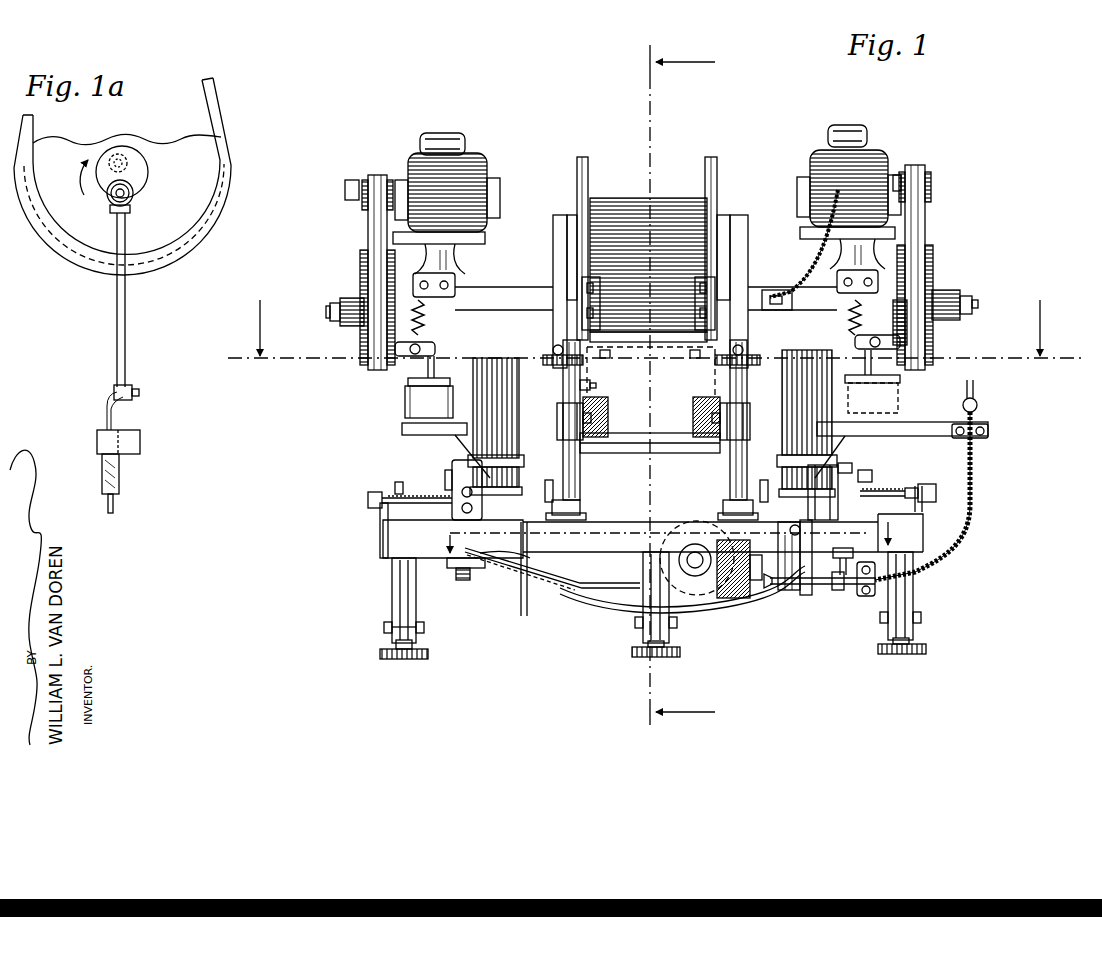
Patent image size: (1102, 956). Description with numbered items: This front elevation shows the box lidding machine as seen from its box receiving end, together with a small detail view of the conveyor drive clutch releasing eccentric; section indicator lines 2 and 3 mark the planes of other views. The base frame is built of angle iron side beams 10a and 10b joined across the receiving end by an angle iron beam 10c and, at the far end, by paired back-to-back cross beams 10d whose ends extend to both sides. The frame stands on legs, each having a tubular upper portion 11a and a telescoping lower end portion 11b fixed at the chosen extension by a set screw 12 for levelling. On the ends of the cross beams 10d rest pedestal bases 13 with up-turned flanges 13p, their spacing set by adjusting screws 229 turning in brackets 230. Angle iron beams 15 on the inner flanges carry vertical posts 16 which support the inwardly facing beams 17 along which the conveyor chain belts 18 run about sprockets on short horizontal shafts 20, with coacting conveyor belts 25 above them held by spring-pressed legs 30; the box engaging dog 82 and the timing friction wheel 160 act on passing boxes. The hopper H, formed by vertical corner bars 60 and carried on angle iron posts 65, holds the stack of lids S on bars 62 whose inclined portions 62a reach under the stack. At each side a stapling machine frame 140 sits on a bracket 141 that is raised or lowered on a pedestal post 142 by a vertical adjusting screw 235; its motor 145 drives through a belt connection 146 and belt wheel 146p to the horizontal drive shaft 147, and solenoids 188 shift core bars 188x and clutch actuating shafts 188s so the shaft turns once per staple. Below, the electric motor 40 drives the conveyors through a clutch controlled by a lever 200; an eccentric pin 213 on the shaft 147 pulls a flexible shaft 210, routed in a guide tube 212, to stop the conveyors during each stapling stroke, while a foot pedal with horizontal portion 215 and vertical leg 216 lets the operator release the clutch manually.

In FIG. 1, the section line 2- 2 is at (678, 384).
In FIG. 1, the section line 3- 3 is at (647, 337).
In FIG. 1, the hopper H is at (680, 187).
In FIG. 1, the stack of box lids S is at (617, 205).
In FIG. 1, the vertical corner bars 60 is at (575, 180).
In FIG. 1, the angle iron posts 65 is at (553, 243).
In FIG. 1, the bars 62 is at (715, 295).
In FIG. 1, the inclined portions 62a is at (762, 297).
In FIG. 1, the box engaging dog 82 is at (548, 358).
In FIG. 1, the electric motor 145 is at (408, 158).
In FIG. 1A, the belt connection 146 is at (216, 95).
In FIG. 1, the belt connection 146 is at (377, 225).
In FIG. 1A, the belt wheel 146p is at (198, 180).
In FIG. 1, the belt wheel 146p is at (368, 352).
In FIG. 1A, the horizontal drive shaft 147 is at (137, 172).
In FIG. 1, the horizontal drive shaft 147 is at (340, 310).
In FIG. 1, the frame structure 140 is at (905, 305).
In FIG. 1A, the eccentric pin 213 is at (133, 200).
In FIG. 1, the eccentric pin 213 is at (978, 302).
In FIG. 1, the core bars 188x is at (430, 335).
In FIG. 1, the clutch actuating shafts 188s is at (367, 370).
In FIG. 1, the vertical adjusting screw 235 is at (408, 385).
In FIG. 1, the solenoids 188 is at (405, 400).
In FIG. 1, the bracket 141 is at (420, 430).
In FIG. 1, the pedestal post 142 is at (490, 356).
In FIG. 1, the conveyor belts 25 is at (605, 357).
In FIG. 1, the friction wheel 160 is at (592, 384).
In FIG. 1, the conveyor chain belts 18 is at (600, 400).
In FIG. 1, the short horizontal shaft 20 is at (610, 412).
In FIG. 1, the legs 30 is at (735, 380).
In FIG. 1, the inwardly facing angle iron beams 17 is at (557, 435).
In FIG. 1, the vertical posts 16 is at (563, 455).
In FIG. 1, the pedestal bases 13 is at (452, 470).
In FIG. 1, the vertical up-turned flanges 13p is at (440, 500).
In FIG. 1, the angle iron beams 15 is at (575, 504).
In FIG. 1, the adjusting screws 229 is at (372, 498).
In FIG. 1, the brackets 230 is at (385, 522).
In FIG. 1, the cross beams 10d is at (400, 545).
In FIG. 1, the tubular upper portion 11a is at (396, 585).
In FIG. 1, the set screw 12 is at (384, 627).
In FIG. 1, the lower end portion 11b is at (396, 646).
In FIG. 1, the side beam 10b is at (525, 540).
In FIG. 1, the horizontal portion 215 is at (548, 572).
In FIG. 1, the angle iron beam 10c is at (605, 545).
In FIG. 1, the electric motor 40 is at (720, 598).
In FIG. 1, the side beam 10a is at (795, 555).
In FIG. 1, the vertical leg 216 is at (840, 585).
In FIG. 1, the lever 200 is at (815, 545).
In FIG. 1A, the flexible shaft 210 is at (114, 413).
In FIG. 1, the flexible shaft 210 is at (848, 582).
In FIG. 1, the guide tube 212 is at (950, 540).